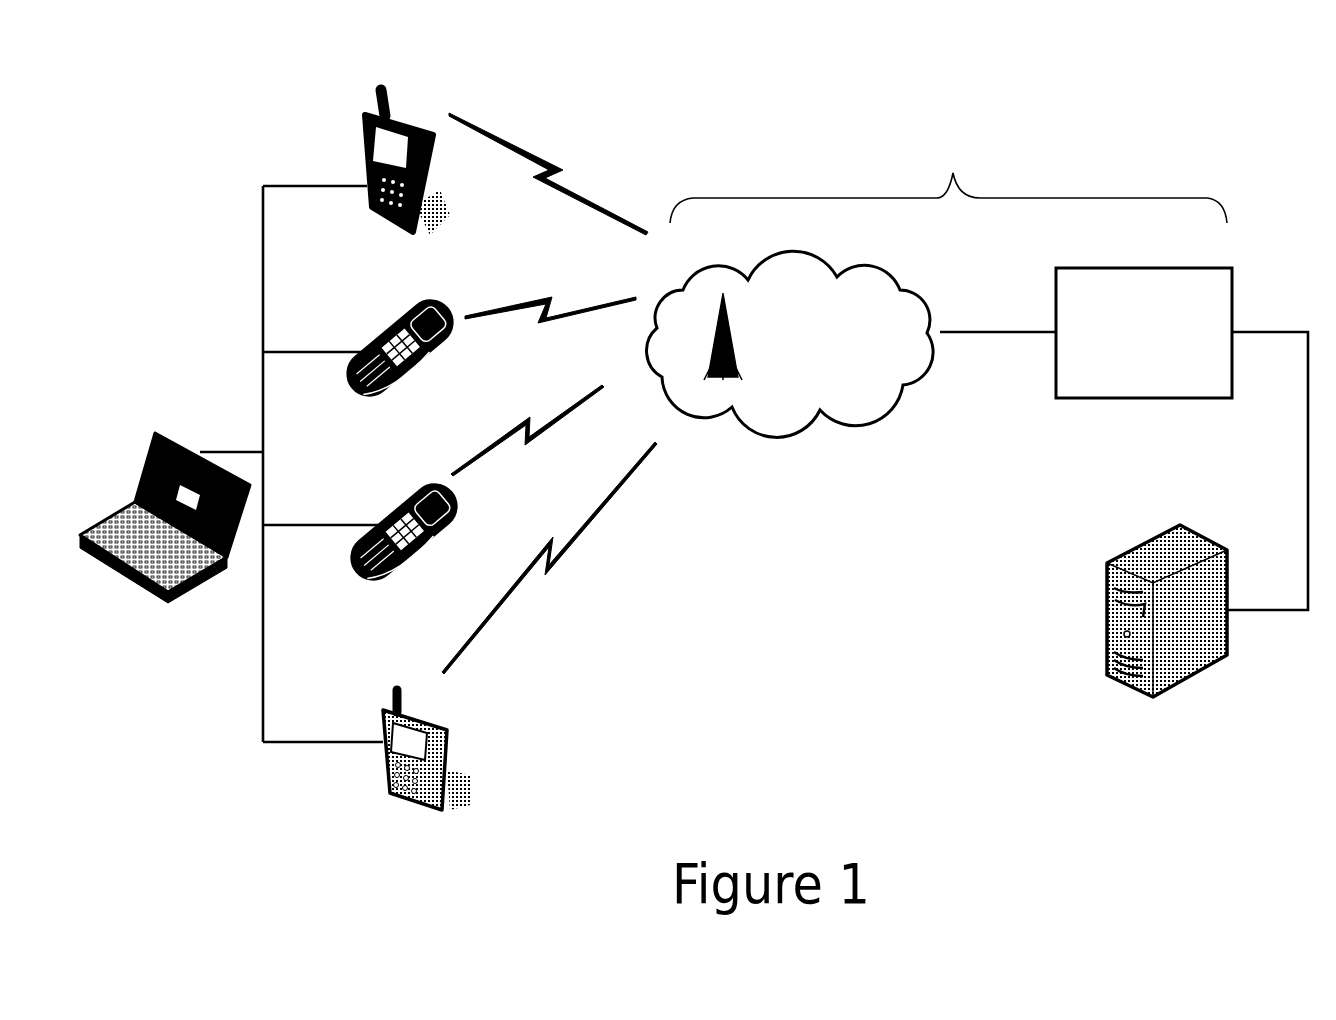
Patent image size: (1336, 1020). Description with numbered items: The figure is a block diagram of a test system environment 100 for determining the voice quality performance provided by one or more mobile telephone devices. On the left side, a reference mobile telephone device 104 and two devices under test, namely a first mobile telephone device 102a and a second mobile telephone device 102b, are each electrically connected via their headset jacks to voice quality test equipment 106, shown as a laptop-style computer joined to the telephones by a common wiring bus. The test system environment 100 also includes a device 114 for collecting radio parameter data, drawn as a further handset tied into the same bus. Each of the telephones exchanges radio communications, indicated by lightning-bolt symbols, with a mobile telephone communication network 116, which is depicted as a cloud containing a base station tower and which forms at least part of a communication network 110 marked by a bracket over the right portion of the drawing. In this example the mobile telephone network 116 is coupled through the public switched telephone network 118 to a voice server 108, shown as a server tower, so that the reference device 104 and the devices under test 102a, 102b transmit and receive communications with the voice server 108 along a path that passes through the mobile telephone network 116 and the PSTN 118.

The test system environment 100 is at (886, 101).
The mobile telephone device to be tested 102a is at (369, 349).
The mobile telephone device to be tested 102b is at (375, 532).
The reference mobile telephone device 104 is at (351, 162).
The voice quality test equipment 106 is at (123, 587).
The voice server 108 is at (1127, 604).
The communication network 110 is at (948, 181).
The device for collecting radio parameter data 114 is at (371, 750).
The mobile telephone communication network 116 is at (790, 328).
The public switched telephone network (PSTN) 118 is at (1144, 315).